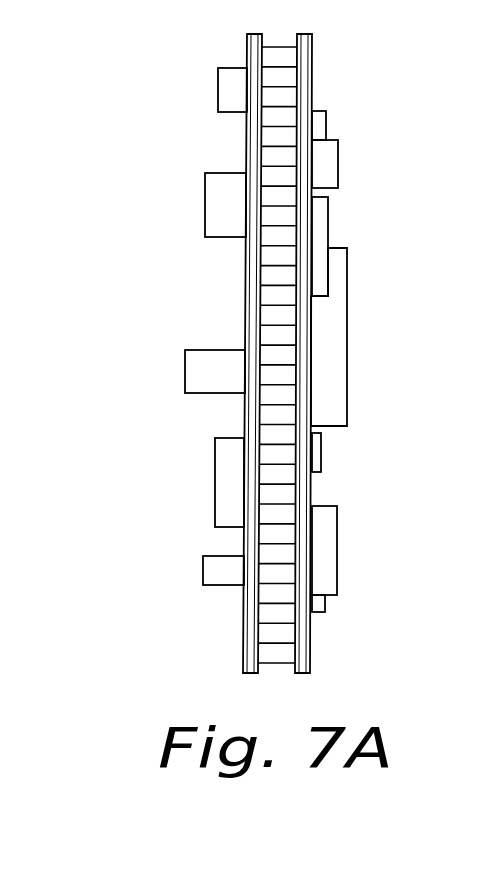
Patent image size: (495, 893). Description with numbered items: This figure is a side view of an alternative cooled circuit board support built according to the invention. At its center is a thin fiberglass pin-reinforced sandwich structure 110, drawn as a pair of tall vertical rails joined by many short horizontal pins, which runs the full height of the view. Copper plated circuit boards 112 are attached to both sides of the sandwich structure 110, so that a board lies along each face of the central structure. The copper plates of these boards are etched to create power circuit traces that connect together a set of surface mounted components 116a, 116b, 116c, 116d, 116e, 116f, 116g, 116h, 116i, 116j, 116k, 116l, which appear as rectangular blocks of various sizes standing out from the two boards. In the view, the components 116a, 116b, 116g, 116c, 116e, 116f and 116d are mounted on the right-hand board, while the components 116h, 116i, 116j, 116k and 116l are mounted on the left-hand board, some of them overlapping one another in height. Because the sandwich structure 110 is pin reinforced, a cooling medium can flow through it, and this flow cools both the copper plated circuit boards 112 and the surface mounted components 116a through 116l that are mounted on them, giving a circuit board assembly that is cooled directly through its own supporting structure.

The pin-reinforced sandwich structure 110 is at (257, 28).
The copper plated circuit boards 112 is at (247, 39).
The surface mounted component 116a is at (321, 123).
The surface mounted component 116b is at (327, 163).
The surface mounted component 116c is at (338, 322).
The surface mounted component 116d is at (325, 609).
The surface mounted component 116e is at (321, 452).
The surface mounted component 116f is at (337, 543).
The surface mounted component 116g is at (321, 222).
The surface mounted component 116h is at (229, 97).
The surface mounted component 116i is at (217, 207).
The surface mounted component 116j is at (185, 363).
The surface mounted component 116k is at (215, 478).
The surface mounted component 116l is at (203, 577).